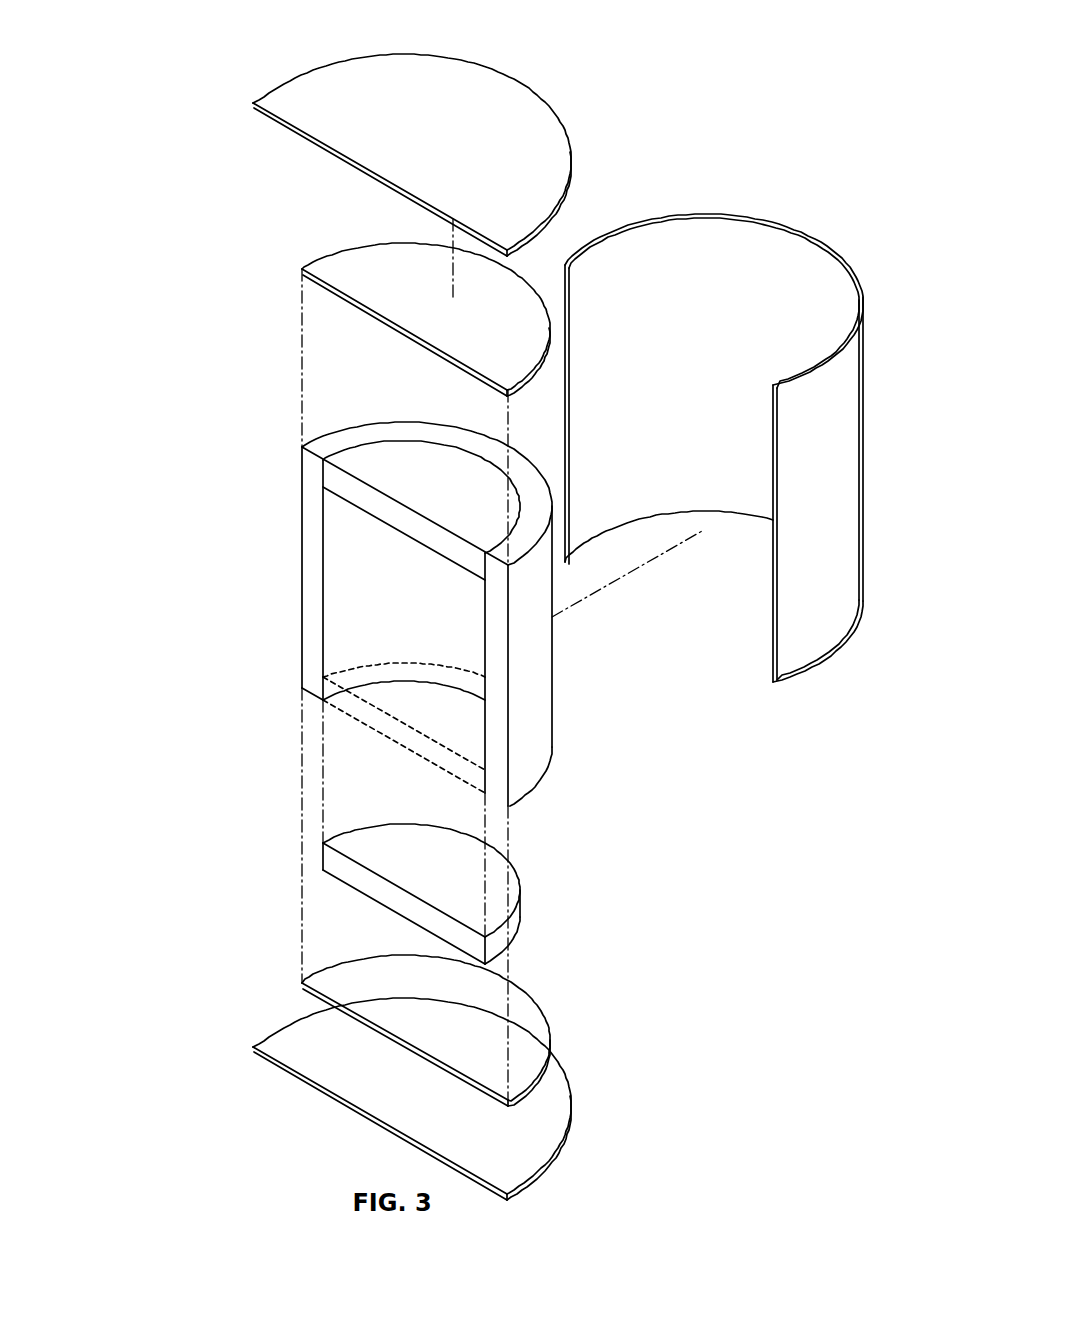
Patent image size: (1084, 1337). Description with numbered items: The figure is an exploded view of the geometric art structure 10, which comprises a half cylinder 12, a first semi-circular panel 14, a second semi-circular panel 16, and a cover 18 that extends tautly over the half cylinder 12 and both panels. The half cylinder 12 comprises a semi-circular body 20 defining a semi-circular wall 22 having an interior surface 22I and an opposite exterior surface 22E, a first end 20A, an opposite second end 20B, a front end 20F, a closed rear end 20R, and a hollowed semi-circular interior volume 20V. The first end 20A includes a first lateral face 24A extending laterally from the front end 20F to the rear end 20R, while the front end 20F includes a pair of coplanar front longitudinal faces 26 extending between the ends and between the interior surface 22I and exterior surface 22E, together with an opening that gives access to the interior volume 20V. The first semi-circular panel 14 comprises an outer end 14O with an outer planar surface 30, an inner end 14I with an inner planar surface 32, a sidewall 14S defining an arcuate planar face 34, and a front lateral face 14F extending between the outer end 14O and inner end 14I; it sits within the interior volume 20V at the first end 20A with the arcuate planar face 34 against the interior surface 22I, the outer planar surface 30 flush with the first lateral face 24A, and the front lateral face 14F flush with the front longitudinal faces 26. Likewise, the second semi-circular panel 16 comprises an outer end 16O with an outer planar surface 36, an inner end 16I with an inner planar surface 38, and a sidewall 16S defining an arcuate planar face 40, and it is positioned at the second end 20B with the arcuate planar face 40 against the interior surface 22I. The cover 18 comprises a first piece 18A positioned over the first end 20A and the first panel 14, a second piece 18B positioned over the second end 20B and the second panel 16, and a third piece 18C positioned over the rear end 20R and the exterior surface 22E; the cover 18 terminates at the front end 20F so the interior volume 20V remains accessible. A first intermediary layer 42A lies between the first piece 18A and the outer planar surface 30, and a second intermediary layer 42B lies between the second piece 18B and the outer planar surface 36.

The geometric art structure 10 is at (144, 412).
The half cylinder 12 is at (300, 575).
The first semi-circular panel 14 is at (375, 518).
The front lateral face 14F is at (348, 487).
The inner end 14I is at (418, 541).
The outer end 14O is at (470, 522).
The sidewall 14S is at (374, 441).
The second semi-circular panel 16 is at (372, 896).
The inner end 16I is at (400, 835).
The outer end 16O is at (410, 920).
The sidewall 16S is at (518, 896).
The cover 18 is at (606, 604).
The first piece 18A is at (507, 110).
The second piece 18B is at (553, 1130).
The third piece 18C is at (836, 400).
The semi-circular body 20 is at (552, 645).
The first end 20A is at (337, 402).
The second end 20B is at (332, 749).
The front end 20F is at (255, 602).
The closed rear end 20R is at (587, 708).
The hollowed semi-circular interior volume 20V is at (350, 629).
The semi-circular wall 22 is at (516, 450).
The exterior surface 22E is at (512, 638).
The interior surface 22I is at (418, 648).
The first lateral face 24A is at (462, 441).
The pair of front longitudinal faces 26 is at (313, 533).
The outer planar surface 30 is at (395, 489).
The inner planar surface 32 is at (462, 566).
The arcuate planar face 34 is at (418, 441).
The outer planar surface 36 is at (336, 876).
The inner planar surface 38 is at (431, 878).
The arcuate planar face 40 is at (496, 934).
The first intermediary layer 42A is at (347, 268).
The second intermediary layer 42B is at (530, 1025).